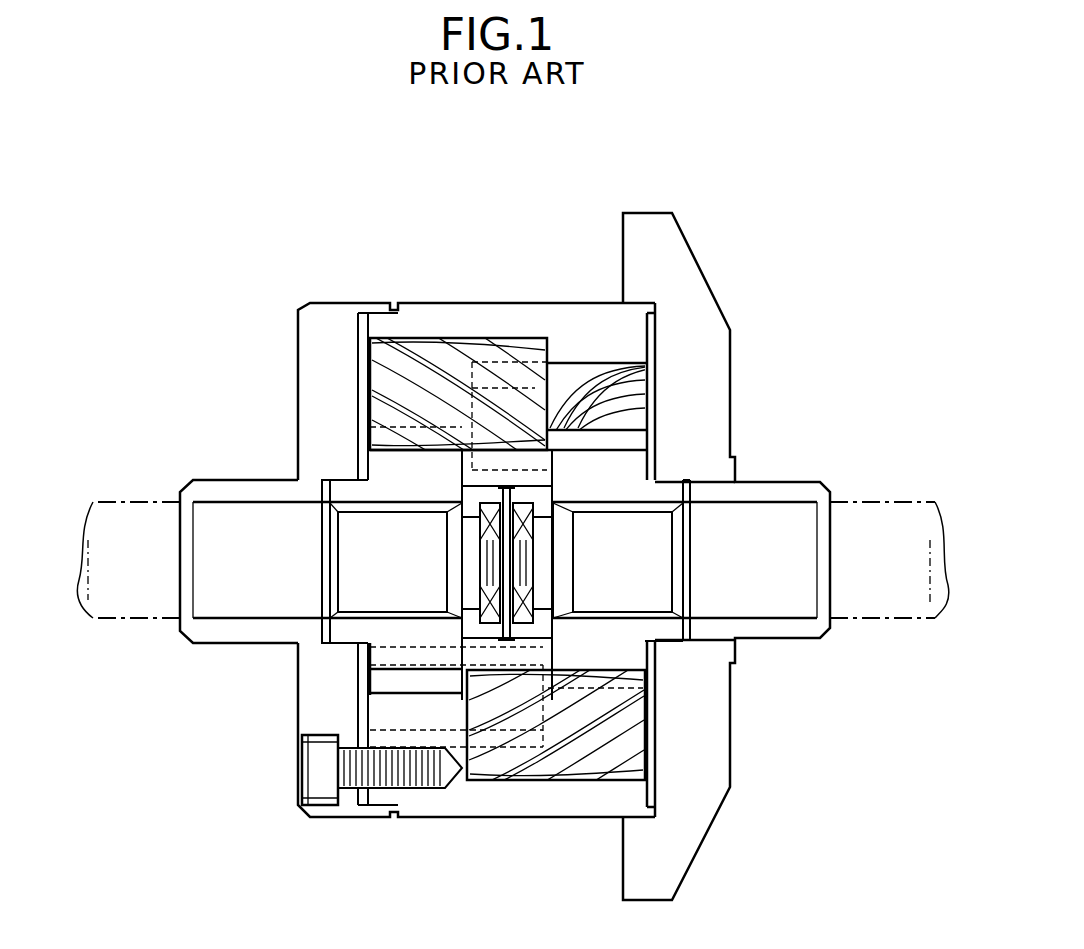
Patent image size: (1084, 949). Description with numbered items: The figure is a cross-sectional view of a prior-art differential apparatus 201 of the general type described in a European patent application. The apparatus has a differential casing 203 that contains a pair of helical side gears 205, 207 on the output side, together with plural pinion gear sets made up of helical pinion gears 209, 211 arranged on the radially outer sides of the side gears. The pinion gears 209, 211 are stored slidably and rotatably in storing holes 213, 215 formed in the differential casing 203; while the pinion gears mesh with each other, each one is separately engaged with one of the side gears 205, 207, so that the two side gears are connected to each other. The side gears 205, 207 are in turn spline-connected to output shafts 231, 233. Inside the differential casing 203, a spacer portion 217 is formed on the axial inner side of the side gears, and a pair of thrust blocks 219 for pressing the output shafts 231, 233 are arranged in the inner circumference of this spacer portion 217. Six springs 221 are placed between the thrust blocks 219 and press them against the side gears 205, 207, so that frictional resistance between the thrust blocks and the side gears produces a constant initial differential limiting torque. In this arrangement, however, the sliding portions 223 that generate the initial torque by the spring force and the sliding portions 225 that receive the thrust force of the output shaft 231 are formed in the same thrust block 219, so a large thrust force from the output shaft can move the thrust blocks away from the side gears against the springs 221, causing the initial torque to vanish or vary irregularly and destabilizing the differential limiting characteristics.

The differential apparatus 201 is at (323, 222).
The differential casing 203 is at (288, 299).
The helical side gear 205 is at (383, 680).
The helical side gear 207 is at (627, 440).
The helical pinion gear 209 is at (427, 345).
The helical pinion gear 211 is at (613, 750).
The storing hole 213 is at (497, 342).
The storing hole 215 is at (544, 762).
The spacer portion 217 is at (473, 478).
The thrust block 219 is at (473, 503).
The spring 221 is at (560, 540).
The sliding portion 223 is at (360, 625).
The sliding portion 225 is at (462, 605).
The output shaft 231 is at (115, 480).
The output shaft 233 is at (880, 480).